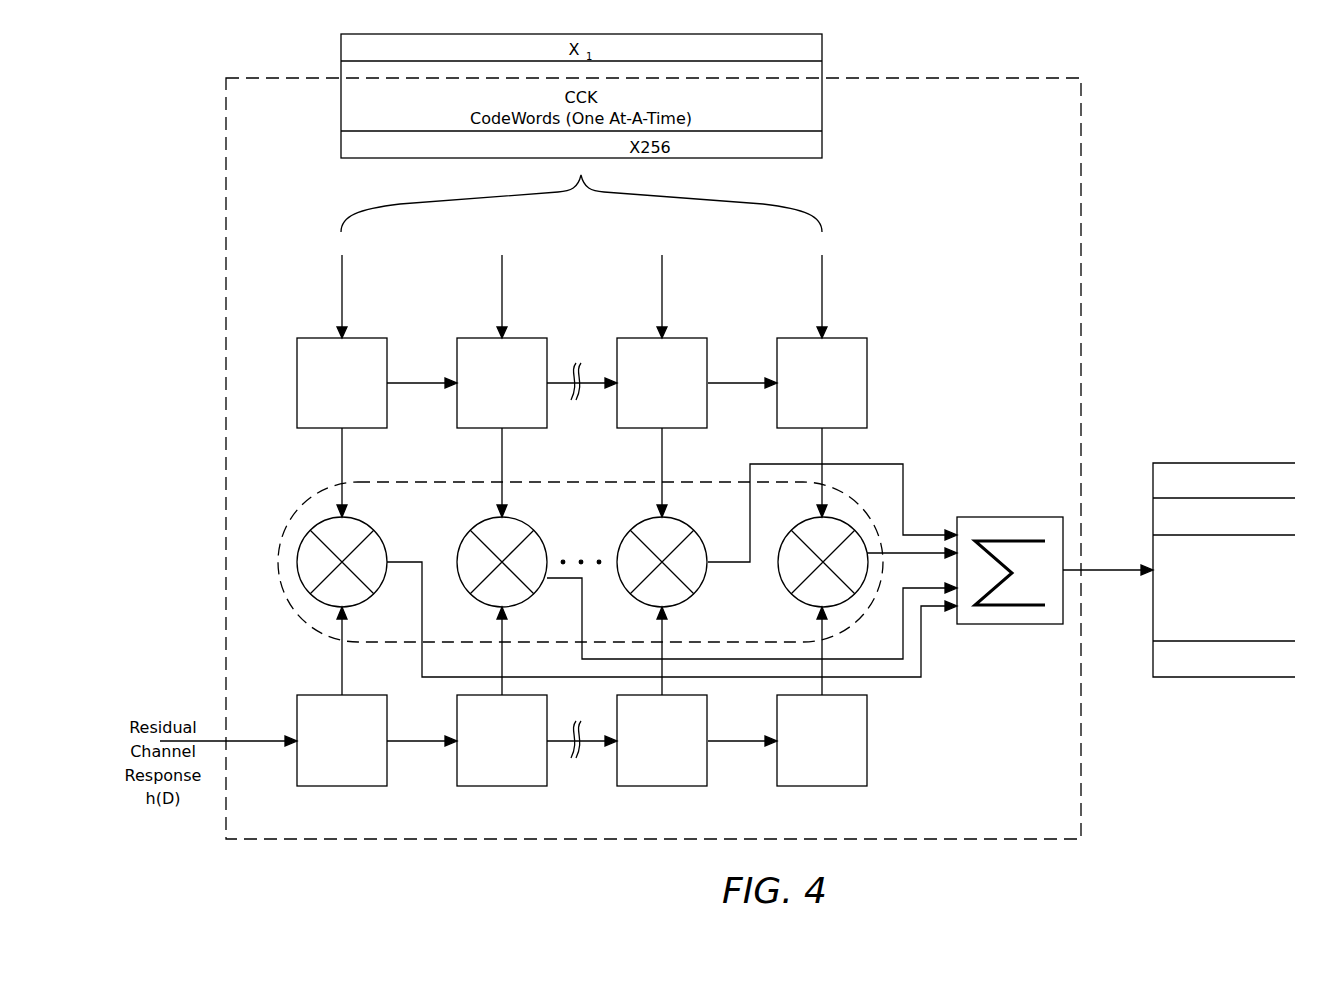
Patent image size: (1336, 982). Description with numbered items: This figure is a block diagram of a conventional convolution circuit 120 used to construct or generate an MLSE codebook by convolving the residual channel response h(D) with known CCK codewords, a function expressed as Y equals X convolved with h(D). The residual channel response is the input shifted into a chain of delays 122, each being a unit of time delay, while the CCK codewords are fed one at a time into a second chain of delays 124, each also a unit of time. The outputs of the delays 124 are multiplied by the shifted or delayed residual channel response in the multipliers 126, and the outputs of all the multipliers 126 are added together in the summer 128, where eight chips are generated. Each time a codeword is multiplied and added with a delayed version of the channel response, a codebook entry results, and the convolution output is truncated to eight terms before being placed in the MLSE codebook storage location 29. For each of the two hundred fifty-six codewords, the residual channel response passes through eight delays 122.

The convolution circuit 120 is at (1081, 793).
The delays 122 is at (340, 787).
The delays 124 is at (367, 336).
The multipliers 126 is at (303, 621).
The summer 128 is at (1010, 626).
The MLSE codebook storage location 29 is at (1187, 463).